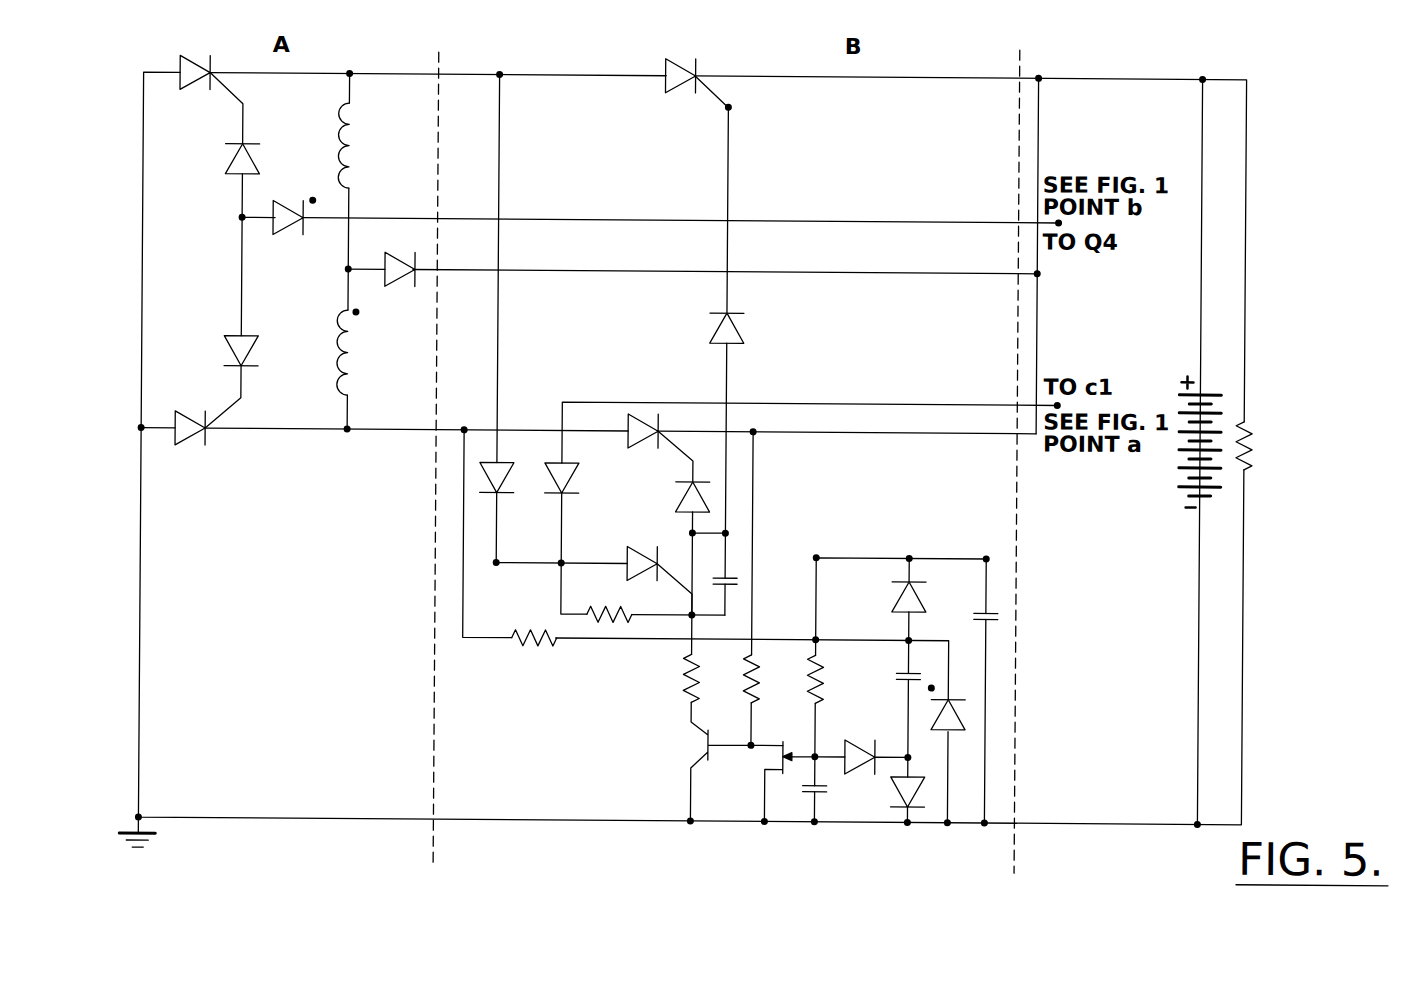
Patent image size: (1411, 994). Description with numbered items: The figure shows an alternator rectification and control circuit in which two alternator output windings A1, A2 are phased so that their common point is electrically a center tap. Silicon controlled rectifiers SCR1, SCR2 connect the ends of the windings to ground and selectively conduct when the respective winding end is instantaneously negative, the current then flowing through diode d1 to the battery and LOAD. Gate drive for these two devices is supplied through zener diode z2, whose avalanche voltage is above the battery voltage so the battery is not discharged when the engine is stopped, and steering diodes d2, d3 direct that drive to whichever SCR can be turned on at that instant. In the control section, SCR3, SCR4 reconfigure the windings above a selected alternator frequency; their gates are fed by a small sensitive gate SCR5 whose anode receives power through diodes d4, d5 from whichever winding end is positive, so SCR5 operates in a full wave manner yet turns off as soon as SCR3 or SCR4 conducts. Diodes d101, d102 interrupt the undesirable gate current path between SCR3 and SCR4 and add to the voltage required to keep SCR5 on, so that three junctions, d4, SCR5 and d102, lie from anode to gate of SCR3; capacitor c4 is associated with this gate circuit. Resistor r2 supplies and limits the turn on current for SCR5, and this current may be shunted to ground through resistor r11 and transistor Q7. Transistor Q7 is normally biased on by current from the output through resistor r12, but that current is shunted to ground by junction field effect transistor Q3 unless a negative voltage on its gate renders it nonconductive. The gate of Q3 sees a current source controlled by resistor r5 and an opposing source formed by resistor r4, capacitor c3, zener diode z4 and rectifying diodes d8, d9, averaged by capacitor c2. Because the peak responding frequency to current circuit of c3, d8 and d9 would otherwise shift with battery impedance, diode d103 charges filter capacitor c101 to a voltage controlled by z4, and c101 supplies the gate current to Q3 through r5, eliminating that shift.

The silicon controlled rectifier SCR1 is at (202, 84).
The silicon controlled rectifier SCR2 is at (183, 414).
The silicon controlled rectifier SCR3 is at (716, 80).
The silicon controlled rectifier SCR4 is at (652, 430).
The small sensitive gate SCR SCR5 is at (651, 566).
The diode d1 is at (384, 258).
The steering diode d2 is at (234, 239).
The steering diode d3 is at (226, 381).
The diode d4 is at (511, 477).
The diode d5 is at (578, 478).
The rectifying diode d8 is at (919, 777).
The rectifying diode d9 is at (862, 745).
The diode d101 is at (664, 494).
The diode d102 is at (761, 330).
The diode d103 is at (879, 596).
The zener diode z2 is at (294, 206).
The zener diode z4 is at (956, 701).
The alternator output winding A1 is at (322, 191).
The alternator output winding A2 is at (325, 368).
The resistor r2 is at (609, 602).
The resistor r4 is at (534, 625).
The current limiting resistor r5 is at (802, 679).
The current limiting resistor r11 is at (671, 678).
The current limiting resistor r12 is at (730, 679).
The capacitor c2 is at (801, 794).
The capacitor c3 is at (895, 675).
The capacitor c4 is at (717, 568).
The filter capacitor c101 is at (963, 601).
The N channel junction field effect transistor Q3 is at (788, 771).
The transistor Q7 is at (720, 763).
The load LOAD is at (1264, 449).